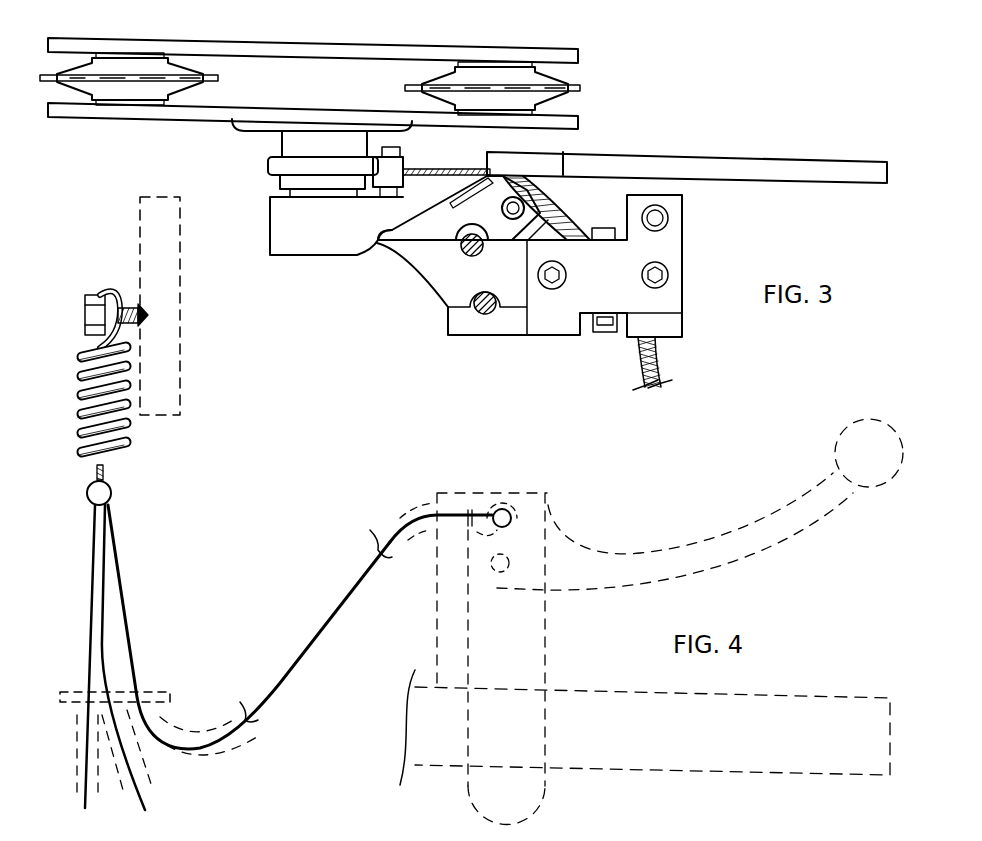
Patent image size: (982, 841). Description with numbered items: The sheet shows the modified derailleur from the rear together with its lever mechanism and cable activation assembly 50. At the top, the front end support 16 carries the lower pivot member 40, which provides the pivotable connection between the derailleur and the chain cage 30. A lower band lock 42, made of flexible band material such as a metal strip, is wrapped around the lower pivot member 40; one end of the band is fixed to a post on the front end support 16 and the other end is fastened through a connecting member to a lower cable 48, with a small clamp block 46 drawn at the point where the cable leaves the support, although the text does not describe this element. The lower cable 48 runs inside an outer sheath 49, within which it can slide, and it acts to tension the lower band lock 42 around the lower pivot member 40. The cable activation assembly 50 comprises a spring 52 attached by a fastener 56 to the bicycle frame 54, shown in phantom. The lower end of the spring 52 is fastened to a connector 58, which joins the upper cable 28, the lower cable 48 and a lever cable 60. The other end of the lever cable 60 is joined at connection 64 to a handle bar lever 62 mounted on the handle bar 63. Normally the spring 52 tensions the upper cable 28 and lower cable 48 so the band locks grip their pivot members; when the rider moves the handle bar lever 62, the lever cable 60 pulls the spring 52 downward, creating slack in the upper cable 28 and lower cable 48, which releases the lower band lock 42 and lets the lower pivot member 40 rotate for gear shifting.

In FIG. 3, the front end support 16 is at (318, 245).
In FIG. 4, the upper cable 28 is at (88, 655).
In FIG. 3, the chain cage 30 is at (404, 46).
In FIG. 3, the lower pivot member 40 is at (283, 141).
In FIG. 3, the lower band lock 42 is at (270, 170).
In FIG. 3, the rope clamp block 46 is at (392, 178).
In FIG. 3, the lower cable 48 is at (438, 171).
In FIG. 4, the lower cable 48 is at (128, 652).
In FIG. 3, the outer sheath 49 is at (665, 355).
In FIG. 3, the cable activation assembly 50 is at (131, 354).
In FIG. 3, the spring 52 is at (77, 403).
In FIG. 3, the bicycle frame 54 is at (176, 290).
In FIG. 3, the fastener 56 is at (95, 300).
In FIG. 3, the connector 58 is at (112, 496).
In FIG. 4, the lever cable 60 is at (333, 615).
In FIG. 4, the handle bar lever 62 is at (730, 540).
In FIG. 4, the handle bar 63 is at (605, 697).
In FIG. 4, the connection 64 is at (503, 508).